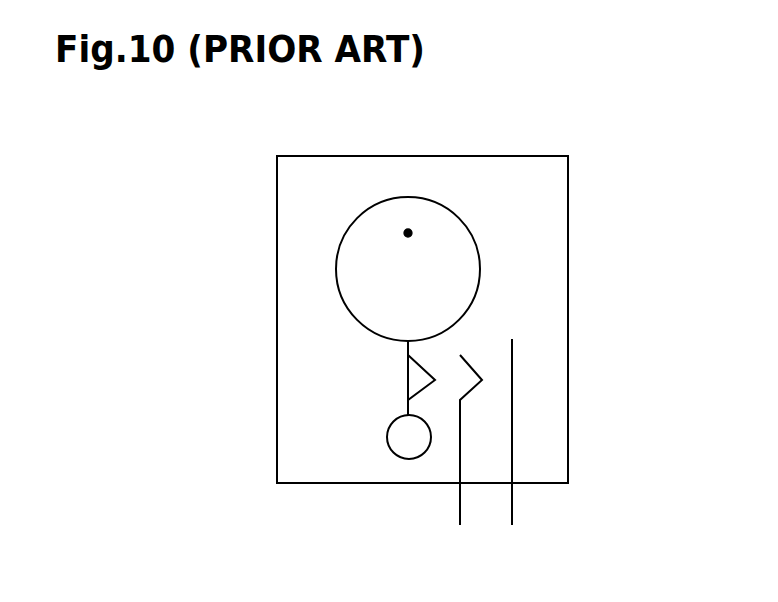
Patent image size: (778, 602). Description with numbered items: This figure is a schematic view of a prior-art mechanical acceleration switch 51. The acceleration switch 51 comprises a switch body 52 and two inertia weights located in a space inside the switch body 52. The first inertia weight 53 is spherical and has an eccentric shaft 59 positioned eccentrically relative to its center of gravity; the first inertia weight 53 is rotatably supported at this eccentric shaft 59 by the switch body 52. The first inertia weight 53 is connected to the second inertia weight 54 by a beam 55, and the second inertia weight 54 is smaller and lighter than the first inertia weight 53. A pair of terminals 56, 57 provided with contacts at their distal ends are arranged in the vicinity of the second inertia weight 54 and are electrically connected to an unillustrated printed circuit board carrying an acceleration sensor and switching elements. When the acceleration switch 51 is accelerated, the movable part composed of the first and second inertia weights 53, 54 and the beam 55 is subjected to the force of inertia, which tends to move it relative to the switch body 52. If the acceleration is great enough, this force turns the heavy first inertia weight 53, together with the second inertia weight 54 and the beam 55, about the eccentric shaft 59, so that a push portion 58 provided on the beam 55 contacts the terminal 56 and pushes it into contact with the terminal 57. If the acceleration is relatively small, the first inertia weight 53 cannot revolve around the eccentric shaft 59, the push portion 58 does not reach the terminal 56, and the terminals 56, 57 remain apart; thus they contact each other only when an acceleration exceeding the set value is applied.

The acceleration switch 51 is at (279, 129).
The switch body 52 is at (568, 185).
The first inertia weight 53 is at (468, 248).
The second inertia weight 54 is at (388, 438).
The beam 55 is at (407, 347).
The terminal 56 is at (461, 506).
The terminal 57 is at (512, 506).
The push portion 58 is at (428, 365).
The eccentric shaft 59 is at (410, 225).